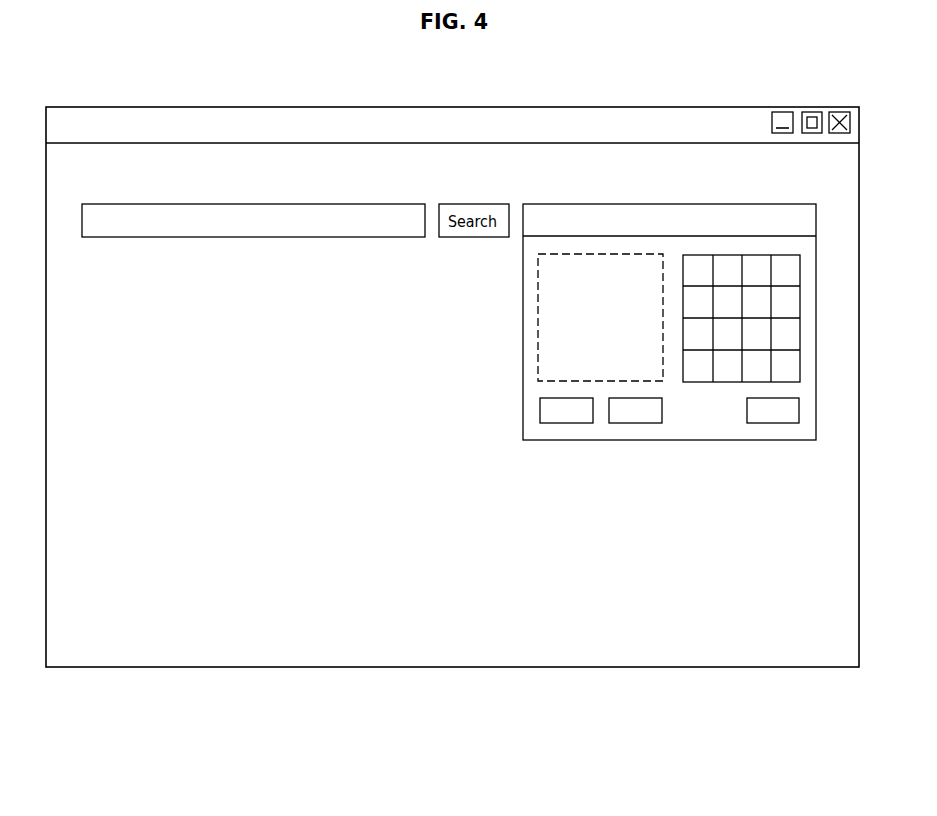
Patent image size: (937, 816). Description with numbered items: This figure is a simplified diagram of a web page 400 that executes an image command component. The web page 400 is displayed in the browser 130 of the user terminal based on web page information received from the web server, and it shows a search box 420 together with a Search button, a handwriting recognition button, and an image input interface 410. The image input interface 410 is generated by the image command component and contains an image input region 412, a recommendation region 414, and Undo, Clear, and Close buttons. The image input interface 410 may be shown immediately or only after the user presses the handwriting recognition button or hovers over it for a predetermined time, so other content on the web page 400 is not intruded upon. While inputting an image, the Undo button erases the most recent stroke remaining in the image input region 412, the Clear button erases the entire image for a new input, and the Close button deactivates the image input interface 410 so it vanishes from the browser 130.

The browser 130 is at (247, 107).
The web page 400 is at (498, 646).
The image input interface 410 is at (662, 343).
The image input region 412 is at (538, 340).
The recommendation region 414 is at (801, 322).
The search box 420 is at (129, 240).